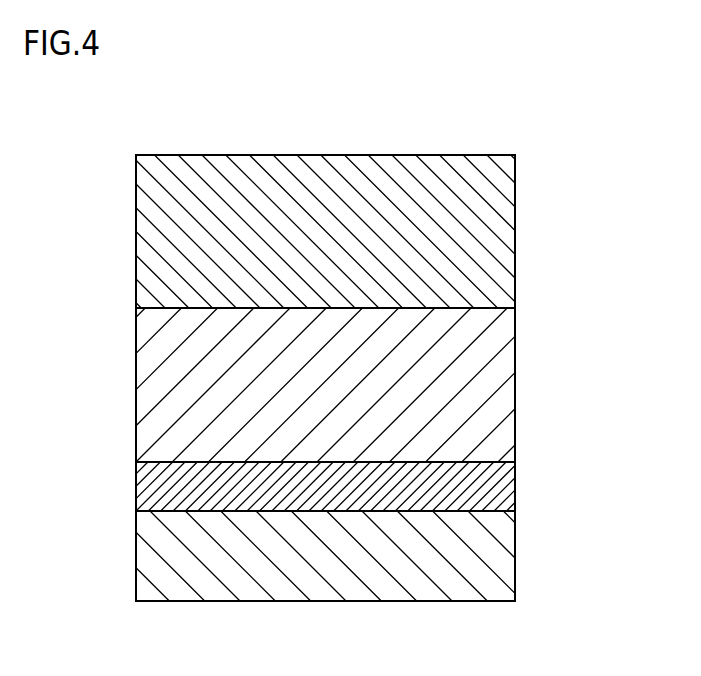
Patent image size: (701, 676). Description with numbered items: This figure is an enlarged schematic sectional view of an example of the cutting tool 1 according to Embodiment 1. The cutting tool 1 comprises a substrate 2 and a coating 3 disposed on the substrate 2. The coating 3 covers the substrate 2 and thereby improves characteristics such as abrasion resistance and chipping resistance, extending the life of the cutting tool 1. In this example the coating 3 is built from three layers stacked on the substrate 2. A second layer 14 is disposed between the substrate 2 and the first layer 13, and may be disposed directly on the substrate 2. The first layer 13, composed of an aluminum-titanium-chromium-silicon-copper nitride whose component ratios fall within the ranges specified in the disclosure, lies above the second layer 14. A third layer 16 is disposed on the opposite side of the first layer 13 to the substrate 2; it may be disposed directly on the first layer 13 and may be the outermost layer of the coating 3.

The cutting tool 1 is at (518, 130).
The substrate 2 is at (502, 560).
The coating 3 is at (605, 155).
The first layer 13 is at (500, 385).
The second layer 14 is at (502, 487).
The third layer 16 is at (500, 237).